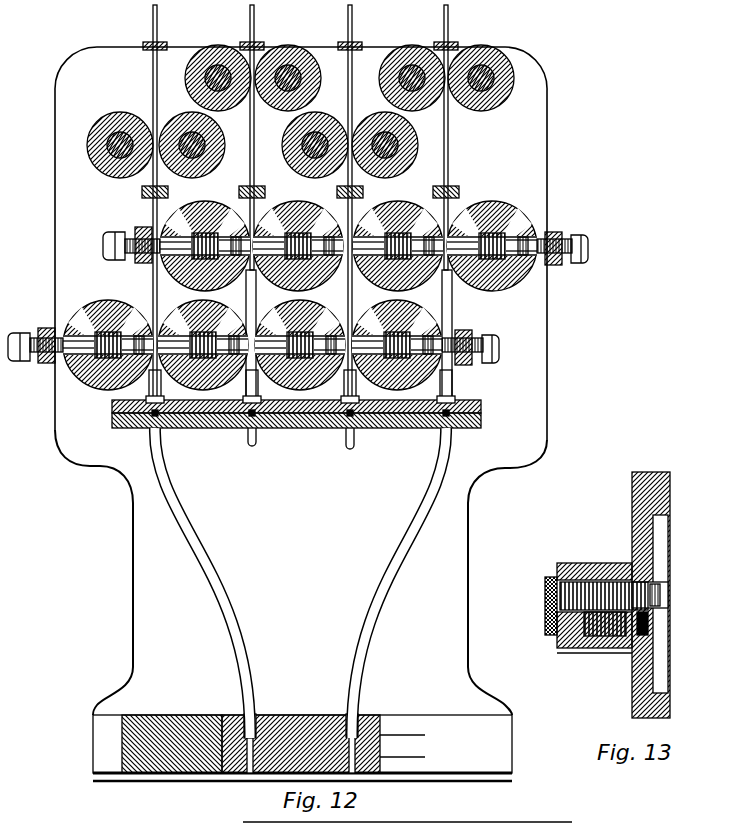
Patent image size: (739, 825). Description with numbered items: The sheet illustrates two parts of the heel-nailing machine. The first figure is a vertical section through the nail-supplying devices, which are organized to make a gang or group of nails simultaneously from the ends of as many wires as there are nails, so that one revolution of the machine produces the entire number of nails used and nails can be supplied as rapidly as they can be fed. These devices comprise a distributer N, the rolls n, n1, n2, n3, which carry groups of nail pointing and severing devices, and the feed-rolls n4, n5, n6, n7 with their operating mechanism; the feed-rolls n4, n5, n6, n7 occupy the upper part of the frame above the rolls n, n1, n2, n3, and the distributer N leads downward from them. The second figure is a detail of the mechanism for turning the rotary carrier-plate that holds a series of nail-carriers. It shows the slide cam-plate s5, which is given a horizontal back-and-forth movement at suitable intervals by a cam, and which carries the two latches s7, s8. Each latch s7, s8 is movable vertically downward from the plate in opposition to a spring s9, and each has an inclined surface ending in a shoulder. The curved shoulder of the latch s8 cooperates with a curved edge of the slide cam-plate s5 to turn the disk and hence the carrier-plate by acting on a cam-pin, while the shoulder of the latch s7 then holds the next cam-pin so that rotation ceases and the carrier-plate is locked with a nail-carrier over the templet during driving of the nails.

In FIG. 12, the roll n is at (110, 303).
In FIG. 12, the roll n1 is at (418, 320).
In FIG. 12, the roll n2 is at (204, 202).
In FIG. 12, the roll n3 is at (497, 204).
In FIG. 12, the feed-roll n4 is at (121, 113).
In FIG. 12, the feed-roll n5 is at (412, 127).
In FIG. 12, the feed-roll n6 is at (514, 78).
In FIG. 12, the feed-roll n7 is at (212, 50).
In FIG. 12, the distributer N is at (186, 537).
In FIG. 13, the slide cam-plate s5 is at (638, 680).
In FIG. 13, the latch s7 is at (648, 625).
In FIG. 13, the latch s8 is at (668, 593).
In FIG. 13, the spring s9 is at (572, 668).